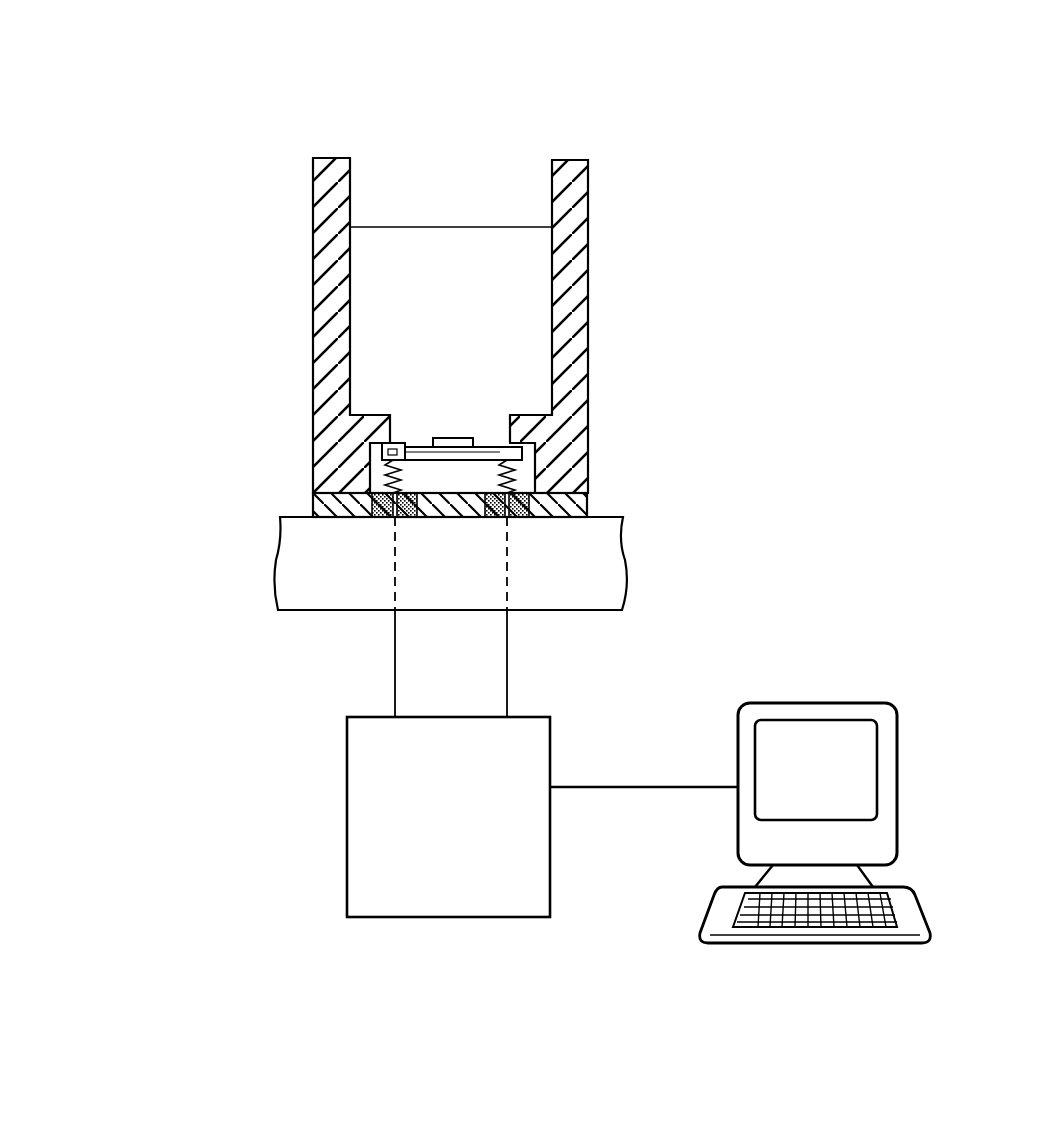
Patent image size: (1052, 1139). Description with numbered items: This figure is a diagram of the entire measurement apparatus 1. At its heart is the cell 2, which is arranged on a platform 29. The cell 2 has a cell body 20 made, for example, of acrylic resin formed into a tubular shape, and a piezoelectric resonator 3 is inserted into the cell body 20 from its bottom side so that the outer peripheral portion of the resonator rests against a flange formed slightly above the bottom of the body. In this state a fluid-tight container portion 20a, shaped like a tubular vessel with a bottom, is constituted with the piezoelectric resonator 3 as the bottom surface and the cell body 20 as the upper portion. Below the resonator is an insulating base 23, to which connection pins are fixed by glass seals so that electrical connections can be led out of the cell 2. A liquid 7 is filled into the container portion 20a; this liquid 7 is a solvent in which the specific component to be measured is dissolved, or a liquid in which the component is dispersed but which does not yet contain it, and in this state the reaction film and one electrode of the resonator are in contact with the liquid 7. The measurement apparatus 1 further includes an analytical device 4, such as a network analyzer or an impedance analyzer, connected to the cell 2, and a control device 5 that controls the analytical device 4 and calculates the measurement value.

The measurement apparatus 1 is at (62, 61).
The cell 2 is at (320, 100).
The cell body 20 is at (590, 272).
The container portion 20a is at (385, 149).
The liquid 7 is at (463, 247).
The piezoelectric resonator 3 is at (407, 409).
The insulating base 23 is at (587, 512).
The platform 29 is at (623, 556).
The analytical device 4 is at (347, 805).
The control device 5 is at (737, 679).